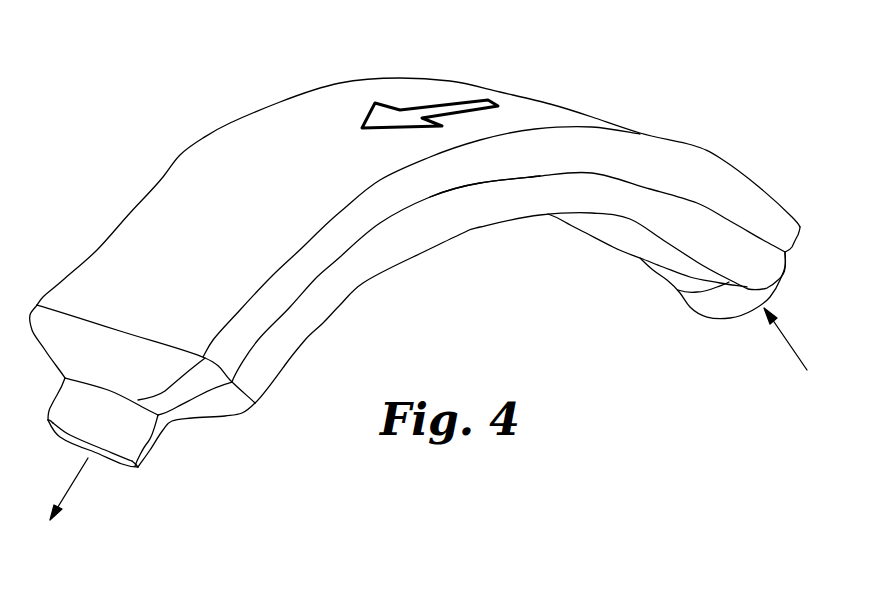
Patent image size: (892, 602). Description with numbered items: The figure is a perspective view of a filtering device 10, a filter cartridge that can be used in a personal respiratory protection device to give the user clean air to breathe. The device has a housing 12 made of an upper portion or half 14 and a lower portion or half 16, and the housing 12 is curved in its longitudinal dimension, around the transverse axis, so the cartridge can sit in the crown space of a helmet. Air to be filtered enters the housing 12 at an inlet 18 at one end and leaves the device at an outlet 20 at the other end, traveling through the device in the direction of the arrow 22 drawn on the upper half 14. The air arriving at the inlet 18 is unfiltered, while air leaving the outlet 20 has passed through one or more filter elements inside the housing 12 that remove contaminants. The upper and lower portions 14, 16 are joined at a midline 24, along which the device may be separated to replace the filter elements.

The filtering device 10 is at (606, 46).
The housing 12 is at (200, 138).
The upper portion or half 14 is at (658, 149).
The lower portion or half 16 is at (402, 247).
The inlet 18 is at (732, 320).
The outlet 20 is at (101, 446).
The arrow 22 is at (435, 107).
The midline 24 is at (473, 187).